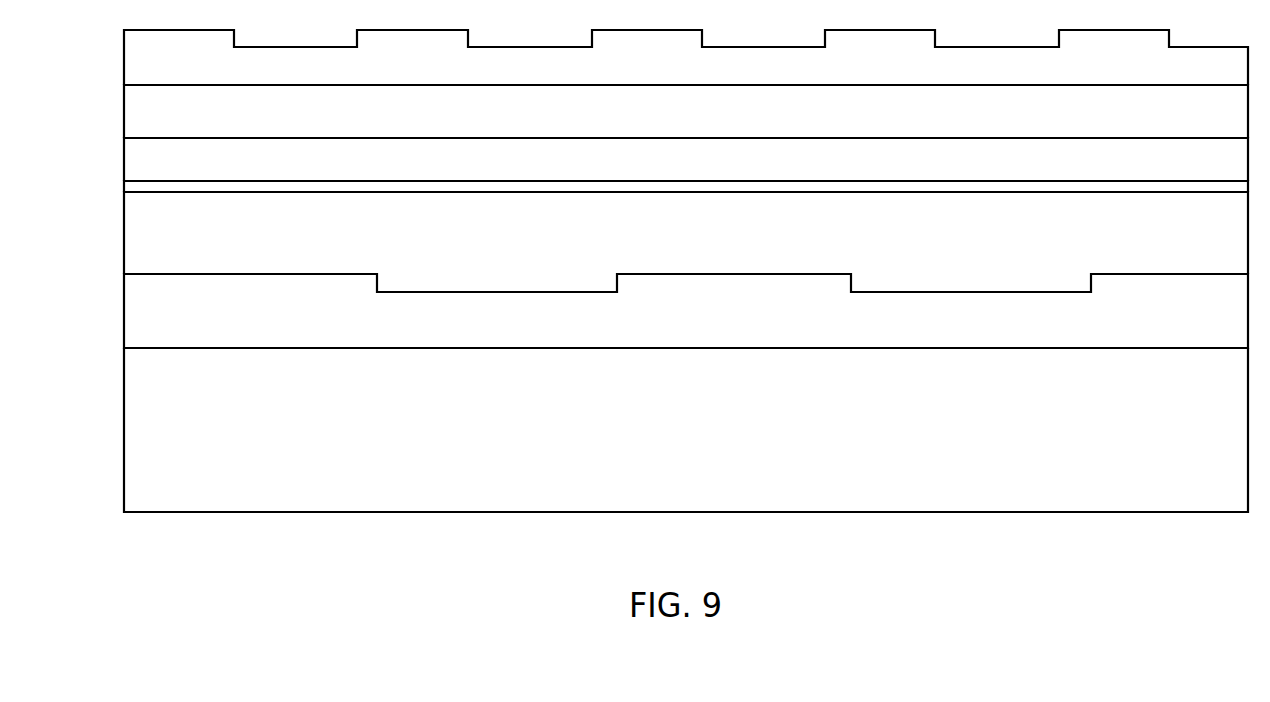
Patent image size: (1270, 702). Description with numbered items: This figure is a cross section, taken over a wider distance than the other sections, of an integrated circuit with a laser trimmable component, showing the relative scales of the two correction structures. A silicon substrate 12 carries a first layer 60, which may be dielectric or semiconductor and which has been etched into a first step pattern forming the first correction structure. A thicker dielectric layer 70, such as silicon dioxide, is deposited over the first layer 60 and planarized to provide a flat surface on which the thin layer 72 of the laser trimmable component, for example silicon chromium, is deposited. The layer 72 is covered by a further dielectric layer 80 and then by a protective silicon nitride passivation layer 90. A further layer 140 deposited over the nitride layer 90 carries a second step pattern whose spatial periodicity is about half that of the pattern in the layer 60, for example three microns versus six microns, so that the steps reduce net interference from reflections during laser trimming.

The silicon substrate 12 is at (137, 462).
The first layer 60 is at (137, 320).
The thicker layer 70 is at (137, 234).
The layer of the laser trimmable component 72 is at (135, 186).
The further dielectric layer 80 is at (137, 157).
The additional protective layer 90 is at (137, 115).
The further layer 140 is at (137, 63).